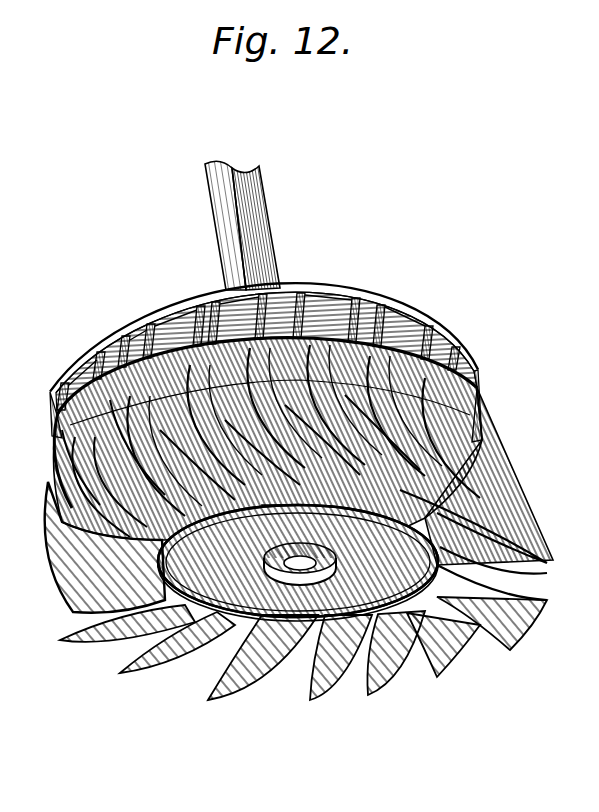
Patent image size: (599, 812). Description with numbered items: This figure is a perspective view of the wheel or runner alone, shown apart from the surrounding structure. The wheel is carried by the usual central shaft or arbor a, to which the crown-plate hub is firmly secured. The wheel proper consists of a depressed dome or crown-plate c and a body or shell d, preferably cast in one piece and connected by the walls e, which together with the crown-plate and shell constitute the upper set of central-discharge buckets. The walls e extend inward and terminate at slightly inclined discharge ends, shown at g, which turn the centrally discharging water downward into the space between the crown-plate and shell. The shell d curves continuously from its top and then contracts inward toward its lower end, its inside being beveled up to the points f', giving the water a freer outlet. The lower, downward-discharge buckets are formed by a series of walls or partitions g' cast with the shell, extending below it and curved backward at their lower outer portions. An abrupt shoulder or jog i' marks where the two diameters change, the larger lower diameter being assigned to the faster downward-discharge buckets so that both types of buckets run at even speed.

The central shaft or arbor a is at (318, 536).
The depressed dome or crown-plate c is at (380, 303).
The body or shell d is at (267, 479).
The walls e is at (266, 353).
The points to which the inside of the shell is beveled f' is at (288, 569).
The inclined termination of the walls g is at (303, 415).
The walls or partitions of the lower buckets g' is at (299, 544).
The abrupt shoulder or jog i' is at (100, 468).